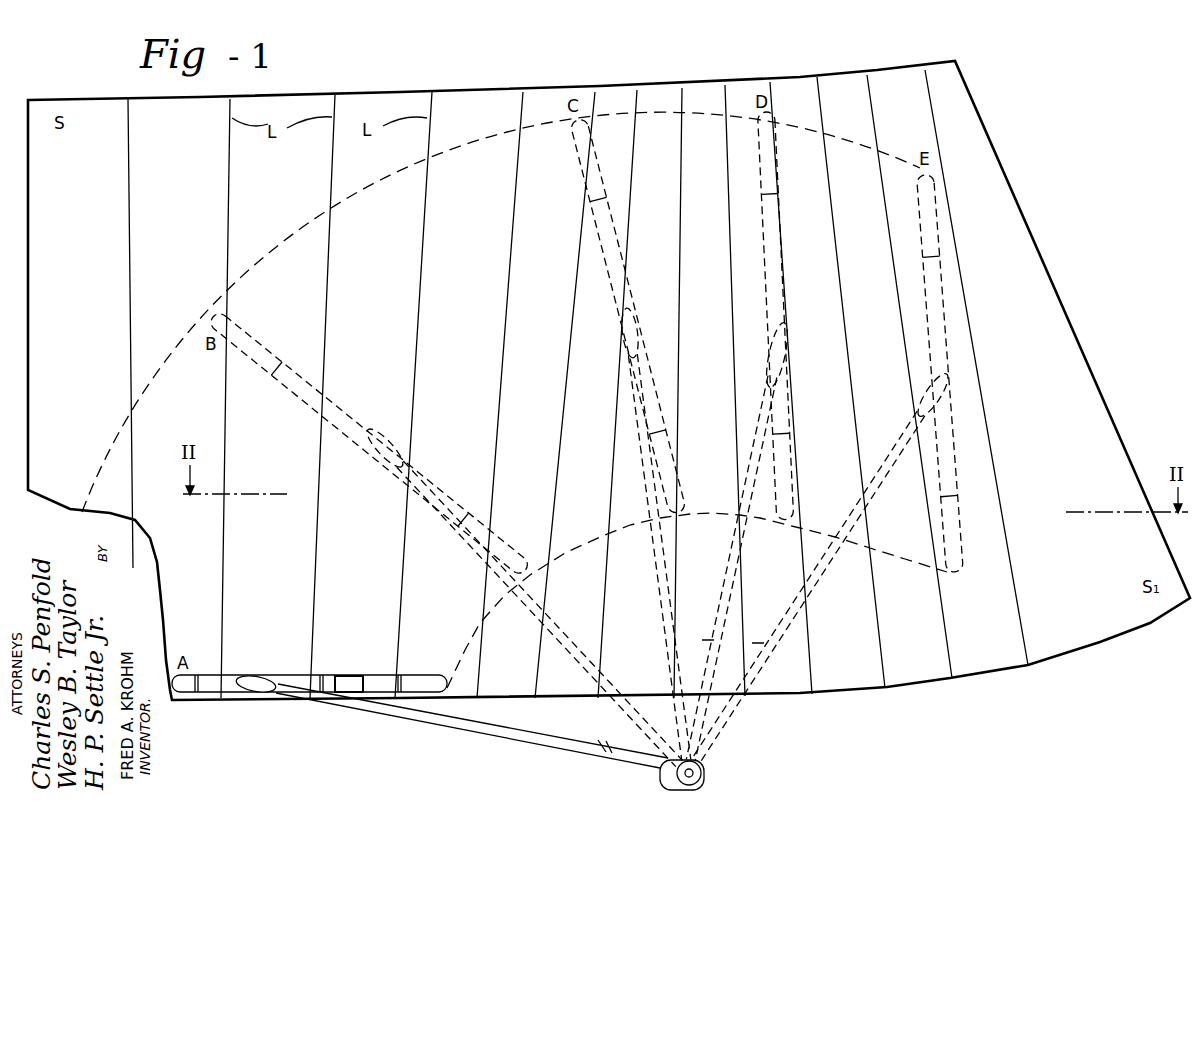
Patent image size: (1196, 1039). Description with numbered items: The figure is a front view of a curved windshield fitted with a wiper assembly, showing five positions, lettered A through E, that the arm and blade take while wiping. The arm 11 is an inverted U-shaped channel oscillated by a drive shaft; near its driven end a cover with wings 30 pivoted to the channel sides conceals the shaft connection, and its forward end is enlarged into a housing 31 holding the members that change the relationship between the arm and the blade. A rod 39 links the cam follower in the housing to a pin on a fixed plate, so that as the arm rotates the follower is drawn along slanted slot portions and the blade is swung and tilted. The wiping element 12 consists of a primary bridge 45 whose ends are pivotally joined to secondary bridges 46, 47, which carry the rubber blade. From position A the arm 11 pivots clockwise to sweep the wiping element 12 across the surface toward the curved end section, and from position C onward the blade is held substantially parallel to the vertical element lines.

The arm 11 is at (520, 752).
The wiping element 12 is at (341, 672).
The wings 30 is at (700, 780).
The housing 31 is at (271, 690).
The rod 39 is at (608, 748).
The primary bridge 45 is at (302, 680).
The secondary bridge 46 is at (252, 340).
The secondary bridge 47 is at (430, 682).